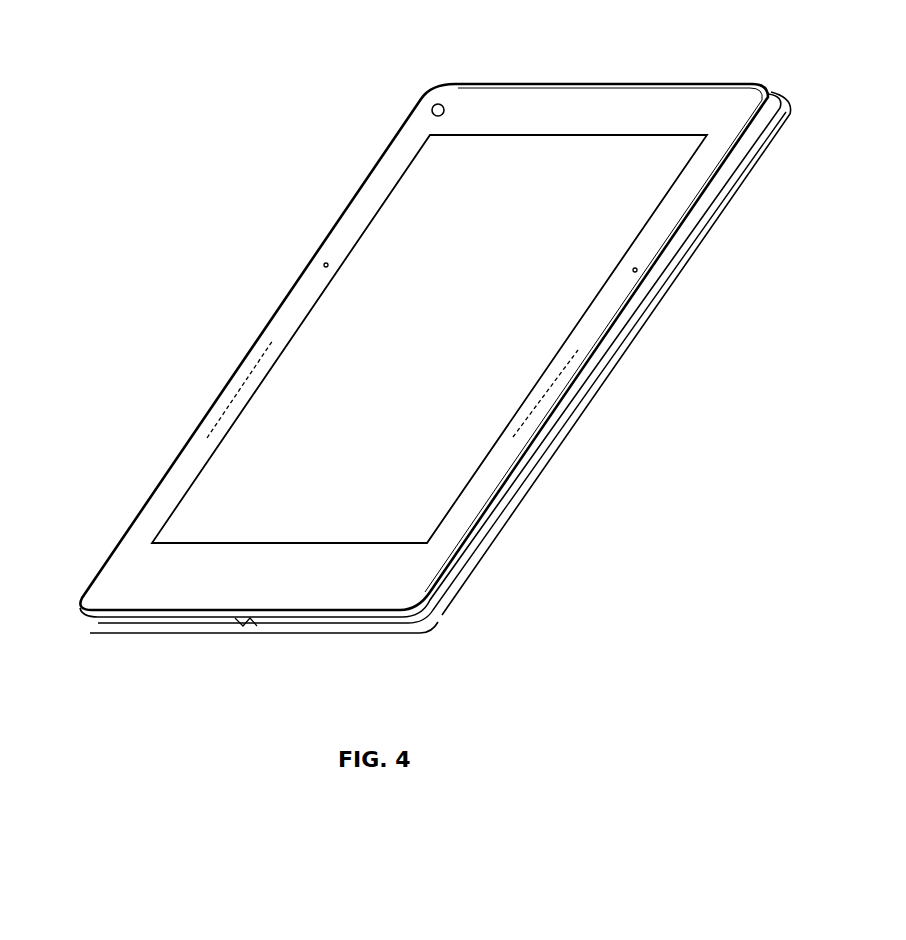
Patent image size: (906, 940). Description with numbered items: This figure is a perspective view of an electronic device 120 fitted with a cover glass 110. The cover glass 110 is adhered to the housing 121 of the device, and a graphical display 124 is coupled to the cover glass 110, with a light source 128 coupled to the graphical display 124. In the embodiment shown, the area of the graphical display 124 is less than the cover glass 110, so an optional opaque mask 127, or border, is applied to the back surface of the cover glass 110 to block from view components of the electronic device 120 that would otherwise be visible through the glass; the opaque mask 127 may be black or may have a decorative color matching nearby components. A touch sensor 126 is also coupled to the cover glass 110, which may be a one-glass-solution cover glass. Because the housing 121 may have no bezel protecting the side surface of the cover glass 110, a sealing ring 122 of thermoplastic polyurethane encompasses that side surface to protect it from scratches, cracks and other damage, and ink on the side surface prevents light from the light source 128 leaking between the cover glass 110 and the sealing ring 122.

The cover glass 110 is at (437, 328).
The electronic device 120 is at (460, 572).
The housing 121 is at (667, 270).
The sealing ring 122 is at (142, 496).
The graphical display 124 is at (262, 474).
The touch sensor 126 is at (496, 461).
The opaque mask 127 is at (634, 100).
The light source 128 is at (210, 560).